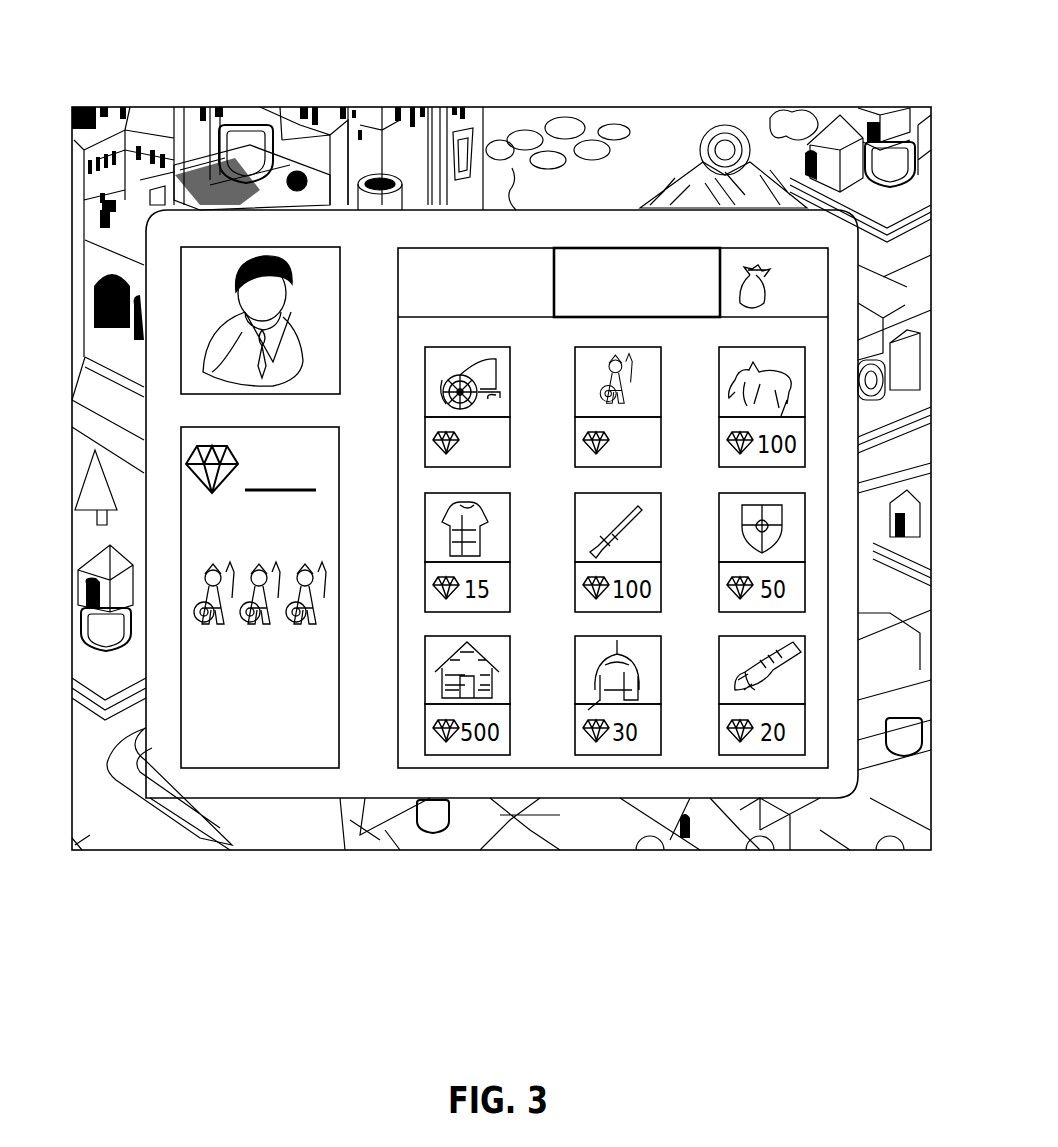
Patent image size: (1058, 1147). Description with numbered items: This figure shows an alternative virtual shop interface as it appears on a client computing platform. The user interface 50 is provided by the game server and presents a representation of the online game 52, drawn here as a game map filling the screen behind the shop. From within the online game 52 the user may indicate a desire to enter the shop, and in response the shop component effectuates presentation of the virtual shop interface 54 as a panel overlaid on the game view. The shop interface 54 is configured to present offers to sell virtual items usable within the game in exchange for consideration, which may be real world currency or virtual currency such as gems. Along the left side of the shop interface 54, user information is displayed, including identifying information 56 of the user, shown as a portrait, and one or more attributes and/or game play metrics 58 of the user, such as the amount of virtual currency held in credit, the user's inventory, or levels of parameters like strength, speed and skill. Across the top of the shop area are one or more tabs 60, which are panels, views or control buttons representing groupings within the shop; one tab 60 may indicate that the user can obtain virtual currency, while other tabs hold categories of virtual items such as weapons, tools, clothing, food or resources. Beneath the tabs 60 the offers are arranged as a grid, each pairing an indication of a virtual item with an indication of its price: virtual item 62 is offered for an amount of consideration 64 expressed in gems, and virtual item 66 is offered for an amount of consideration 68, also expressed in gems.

The user interface 50 is at (137, 107).
The online game 52 is at (330, 130).
The virtual shop interface 54 is at (416, 207).
The identifying information 56 is at (180, 321).
The attributes and/or game play metrics 58 is at (180, 578).
The tabs 60 is at (465, 248).
The virtual item 62 is at (508, 378).
The consideration 64 is at (480, 465).
The virtual item 66 is at (660, 378).
The consideration 68 is at (640, 466).